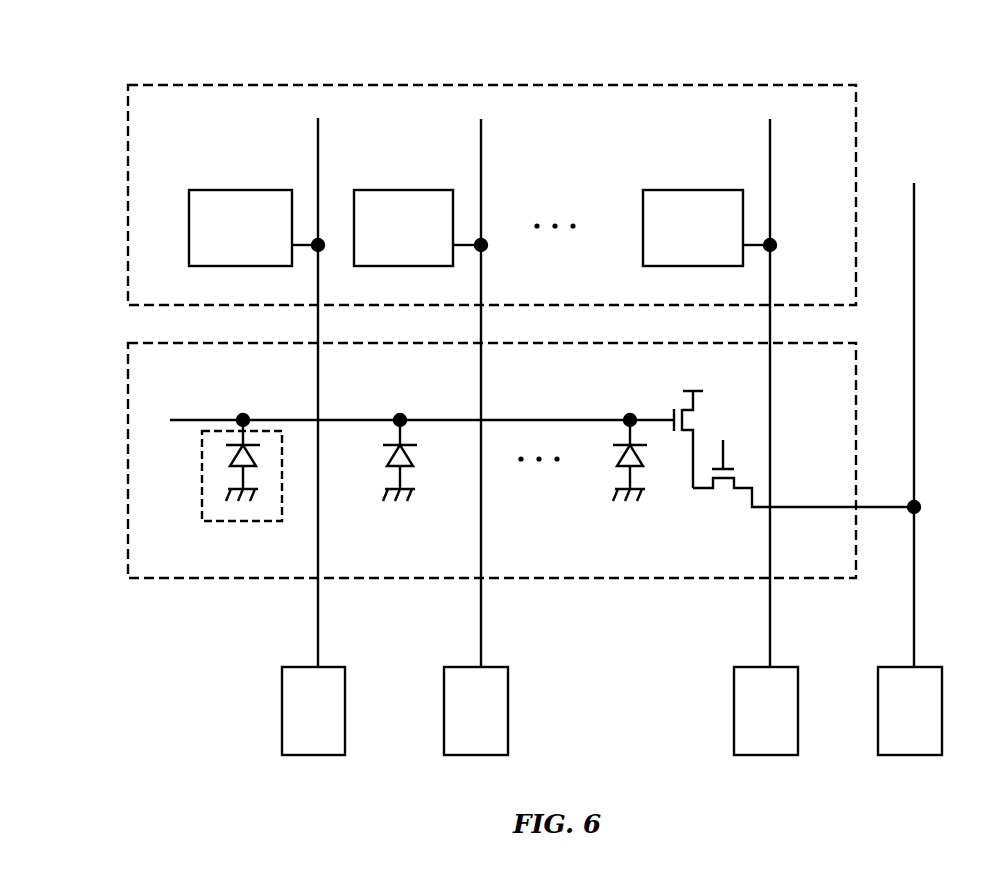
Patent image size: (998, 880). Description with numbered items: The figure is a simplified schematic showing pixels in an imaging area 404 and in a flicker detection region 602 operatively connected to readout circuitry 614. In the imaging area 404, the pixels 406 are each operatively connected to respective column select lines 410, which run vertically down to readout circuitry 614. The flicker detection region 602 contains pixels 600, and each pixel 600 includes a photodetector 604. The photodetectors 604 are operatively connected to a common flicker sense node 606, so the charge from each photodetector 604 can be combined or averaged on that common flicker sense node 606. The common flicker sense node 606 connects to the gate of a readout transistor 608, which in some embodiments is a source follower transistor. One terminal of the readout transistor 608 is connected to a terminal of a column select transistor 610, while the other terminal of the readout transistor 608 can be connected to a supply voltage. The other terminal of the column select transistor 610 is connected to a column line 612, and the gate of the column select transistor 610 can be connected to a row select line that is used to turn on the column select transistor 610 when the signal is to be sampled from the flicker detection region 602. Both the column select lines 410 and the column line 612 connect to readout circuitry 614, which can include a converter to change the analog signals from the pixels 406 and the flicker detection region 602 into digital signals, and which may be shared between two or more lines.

The imaging area 404 is at (292, 82).
The pixels 406 is at (238, 190).
The column select lines 410 is at (770, 148).
The pixels 600 is at (240, 527).
The flicker detection region 602 is at (605, 580).
The photodetector 604 is at (232, 460).
The common flicker sense node 606 is at (400, 416).
The readout transistor 608 is at (692, 421).
The column select transistor 610 is at (723, 487).
The column line 612 is at (914, 293).
The readout circuitry 614 is at (282, 708).